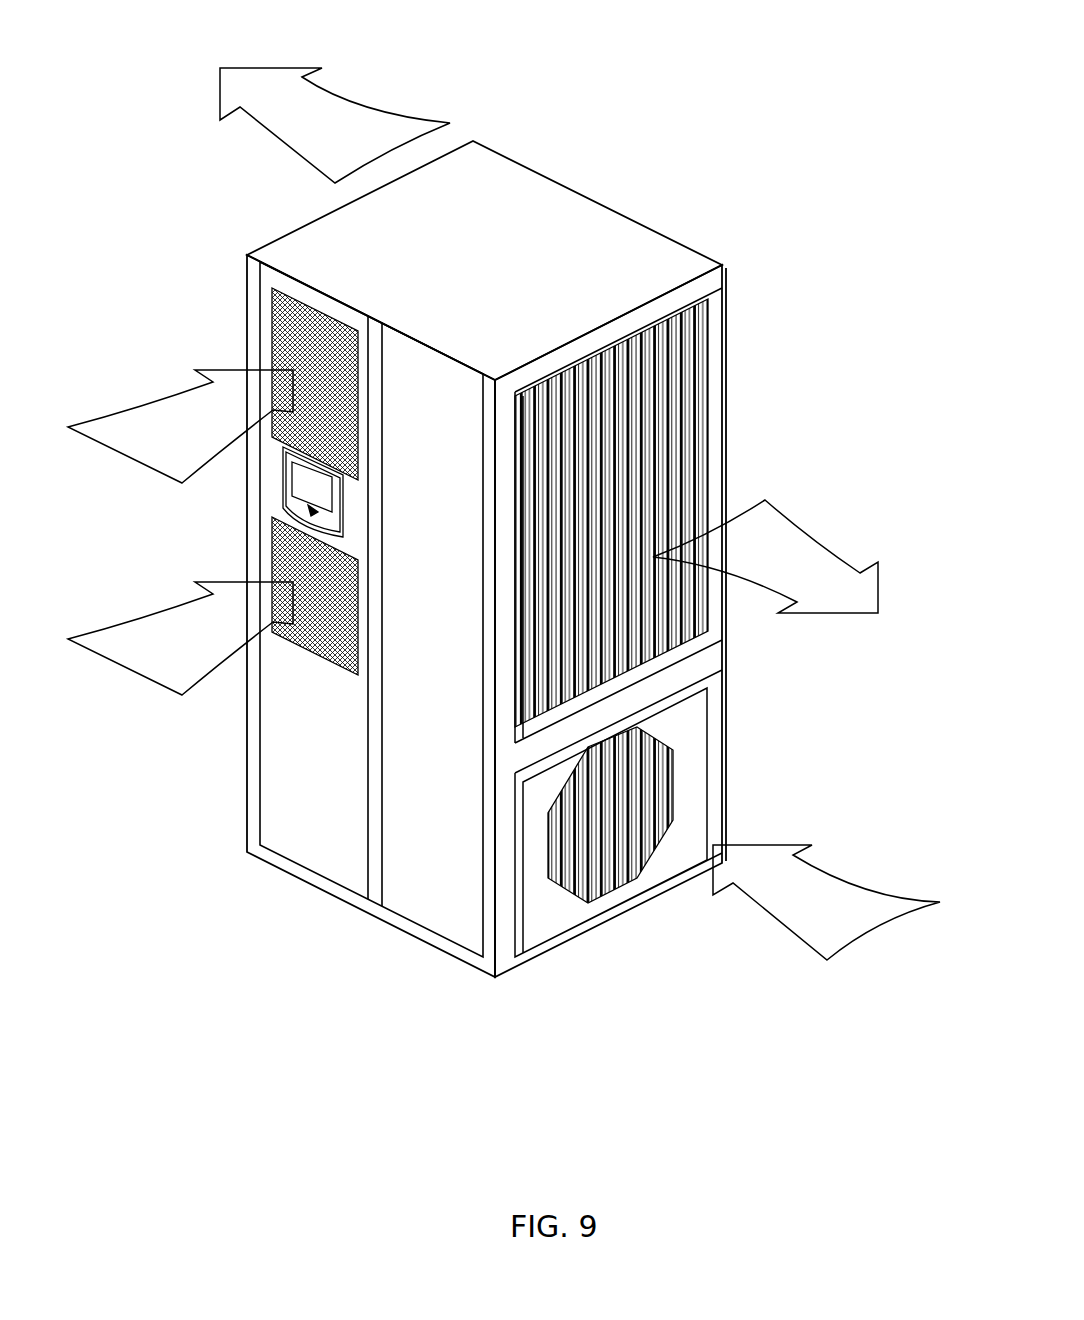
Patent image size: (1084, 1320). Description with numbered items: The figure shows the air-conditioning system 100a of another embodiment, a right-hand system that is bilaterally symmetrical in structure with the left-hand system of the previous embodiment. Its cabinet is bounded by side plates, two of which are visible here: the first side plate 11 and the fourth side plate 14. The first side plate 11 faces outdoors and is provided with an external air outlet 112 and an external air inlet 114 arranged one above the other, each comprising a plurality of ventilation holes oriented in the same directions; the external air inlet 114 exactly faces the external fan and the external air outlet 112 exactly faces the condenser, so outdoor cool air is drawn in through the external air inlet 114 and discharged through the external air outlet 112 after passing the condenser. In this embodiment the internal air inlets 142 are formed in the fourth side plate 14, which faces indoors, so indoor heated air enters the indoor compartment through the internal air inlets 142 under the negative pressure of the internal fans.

The air-conditioning system 100a is at (600, 172).
The first side plate 11 is at (686, 702).
The external air outlet 112 is at (710, 410).
The external air inlet 114 is at (623, 883).
The fourth side plate 14 is at (270, 609).
The internal air inlets 142 is at (290, 427).